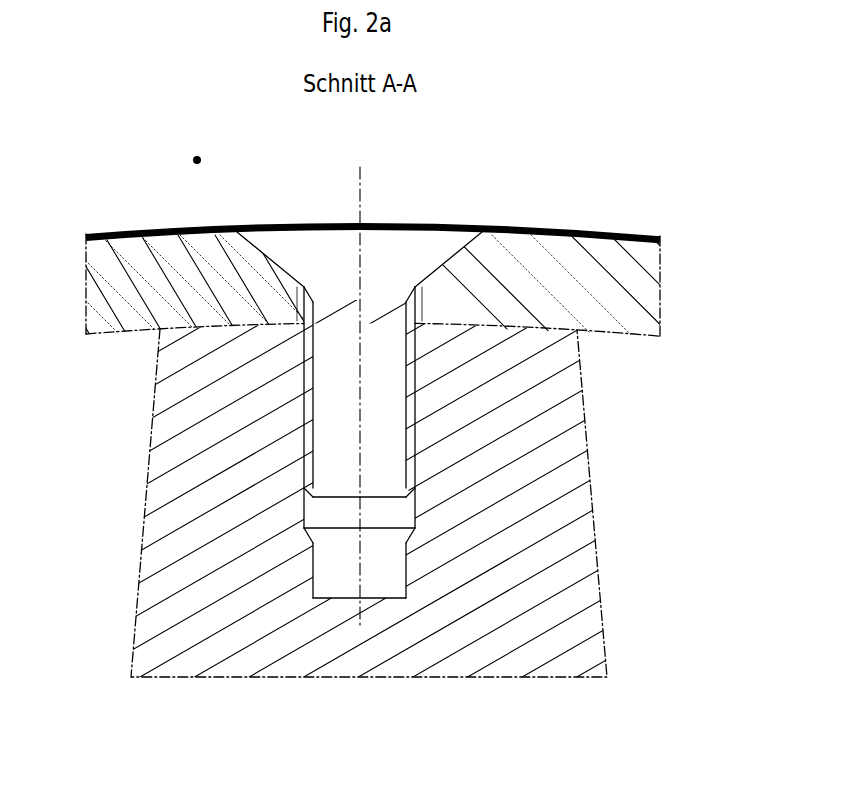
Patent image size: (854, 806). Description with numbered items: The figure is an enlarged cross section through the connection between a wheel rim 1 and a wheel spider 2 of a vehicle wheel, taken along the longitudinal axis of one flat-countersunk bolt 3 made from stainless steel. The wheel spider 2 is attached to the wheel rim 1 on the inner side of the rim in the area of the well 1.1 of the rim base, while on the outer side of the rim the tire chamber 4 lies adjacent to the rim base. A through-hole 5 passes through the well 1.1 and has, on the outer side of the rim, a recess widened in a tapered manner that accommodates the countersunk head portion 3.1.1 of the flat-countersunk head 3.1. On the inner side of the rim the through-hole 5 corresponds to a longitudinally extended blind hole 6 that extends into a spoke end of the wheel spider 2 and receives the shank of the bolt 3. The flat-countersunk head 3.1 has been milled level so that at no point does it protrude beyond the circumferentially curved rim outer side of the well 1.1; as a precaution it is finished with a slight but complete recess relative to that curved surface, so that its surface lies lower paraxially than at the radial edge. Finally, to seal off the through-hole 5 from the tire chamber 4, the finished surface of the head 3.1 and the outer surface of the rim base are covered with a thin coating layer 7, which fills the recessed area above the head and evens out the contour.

The wheel rim 1 is at (557, 248).
The well 1.1 is at (373, 329).
The wheel spider 2 is at (550, 418).
The flat-countersunk bolt 3 is at (325, 258).
The flat-countersunk head 3.1 is at (359, 407).
The countersunk head portion 3.1.1 is at (359, 294).
The tire chamber 4 is at (195, 143).
The through-hole 5 is at (422, 307).
The blind hole 6 is at (406, 512).
The coating layer 7 is at (435, 228).